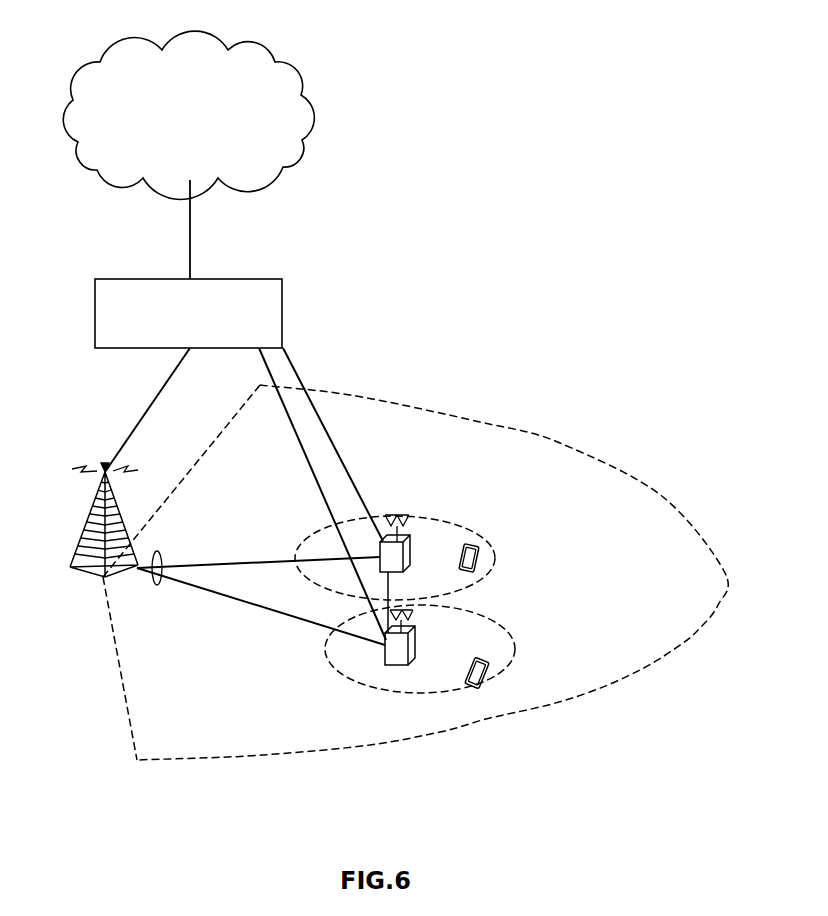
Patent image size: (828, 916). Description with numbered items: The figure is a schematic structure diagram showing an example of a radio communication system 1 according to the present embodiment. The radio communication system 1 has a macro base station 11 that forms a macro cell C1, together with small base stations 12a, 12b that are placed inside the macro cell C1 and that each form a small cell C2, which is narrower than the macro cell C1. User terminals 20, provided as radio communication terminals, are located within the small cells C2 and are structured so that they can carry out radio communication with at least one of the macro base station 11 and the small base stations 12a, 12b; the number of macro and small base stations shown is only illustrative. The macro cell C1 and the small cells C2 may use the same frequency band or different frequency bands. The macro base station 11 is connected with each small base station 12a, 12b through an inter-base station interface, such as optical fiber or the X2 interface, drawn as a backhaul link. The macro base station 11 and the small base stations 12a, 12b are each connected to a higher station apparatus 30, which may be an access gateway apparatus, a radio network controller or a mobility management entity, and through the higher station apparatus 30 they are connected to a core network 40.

The radio communication system 1 is at (491, 291).
The core network 40 is at (254, 41).
The higher station apparatus 30 is at (254, 279).
The macro base station 11 is at (85, 519).
The small base station 12a is at (413, 552).
The small base station 12b is at (398, 666).
The user terminal 20 is at (473, 546).
The macro cell C1 is at (565, 442).
The small cell C2 is at (495, 567).